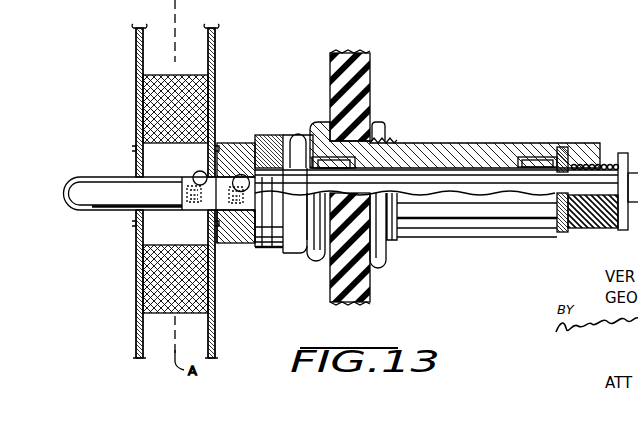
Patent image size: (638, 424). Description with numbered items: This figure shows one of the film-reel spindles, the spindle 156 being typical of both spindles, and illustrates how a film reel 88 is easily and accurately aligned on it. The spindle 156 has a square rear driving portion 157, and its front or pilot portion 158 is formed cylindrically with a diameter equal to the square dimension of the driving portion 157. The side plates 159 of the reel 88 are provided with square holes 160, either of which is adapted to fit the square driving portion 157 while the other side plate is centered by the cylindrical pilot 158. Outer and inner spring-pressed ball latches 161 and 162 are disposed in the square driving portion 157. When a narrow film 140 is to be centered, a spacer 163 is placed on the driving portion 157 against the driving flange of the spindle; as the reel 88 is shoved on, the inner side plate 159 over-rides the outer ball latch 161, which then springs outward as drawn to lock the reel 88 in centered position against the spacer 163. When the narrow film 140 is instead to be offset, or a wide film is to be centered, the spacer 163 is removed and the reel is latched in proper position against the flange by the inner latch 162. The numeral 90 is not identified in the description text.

The film reel 88 is at (114, 71).
The side plates 159 is at (138, 42).
The narrow film 140 is at (190, 73).
The spindle 156 is at (66, 195).
The pilot portion 158 is at (90, 208).
The square holes 160 is at (139, 177).
The outer spring-pressed ball latch 161 is at (183, 190).
The inner spring-pressed ball latch 162 is at (226, 215).
The spacer 163 is at (238, 170).
The square rear driving portion 157 is at (221, 246).
The drive housing 90 is at (446, 152).